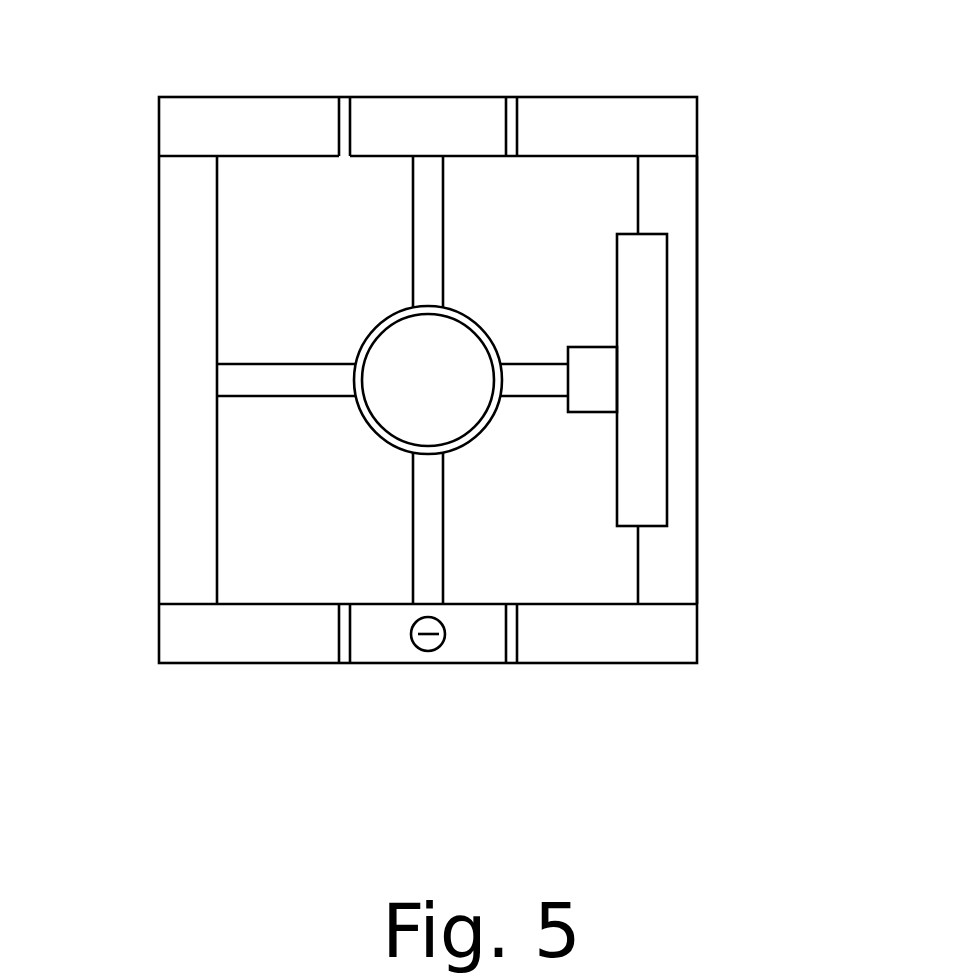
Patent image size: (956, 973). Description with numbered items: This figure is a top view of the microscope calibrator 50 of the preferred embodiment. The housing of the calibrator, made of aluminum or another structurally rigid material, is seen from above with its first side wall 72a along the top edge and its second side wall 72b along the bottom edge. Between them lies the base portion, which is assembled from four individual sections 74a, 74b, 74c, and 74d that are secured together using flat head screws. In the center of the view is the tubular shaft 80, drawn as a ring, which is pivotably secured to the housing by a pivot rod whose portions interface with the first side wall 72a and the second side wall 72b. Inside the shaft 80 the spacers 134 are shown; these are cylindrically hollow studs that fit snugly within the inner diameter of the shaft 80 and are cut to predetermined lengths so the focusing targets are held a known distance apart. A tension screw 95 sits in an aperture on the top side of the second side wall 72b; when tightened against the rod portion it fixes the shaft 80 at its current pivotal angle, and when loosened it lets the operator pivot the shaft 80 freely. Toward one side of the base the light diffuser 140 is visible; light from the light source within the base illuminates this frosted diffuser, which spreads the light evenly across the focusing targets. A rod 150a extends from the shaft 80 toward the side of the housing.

The microscope calibrator 50 is at (762, 66).
The first side wall 72a is at (480, 108).
The second side wall 72b is at (490, 640).
The base portion section 74a is at (232, 108).
The base portion section 74b is at (683, 213).
The base portion section 74c is at (657, 640).
The base portion section 74d is at (185, 206).
The tubular shaft 80 is at (465, 312).
The tension screw 95 is at (428, 651).
The spacers 134 is at (477, 430).
The light diffuser 140 is at (610, 192).
The horizontal rod 150a is at (255, 372).